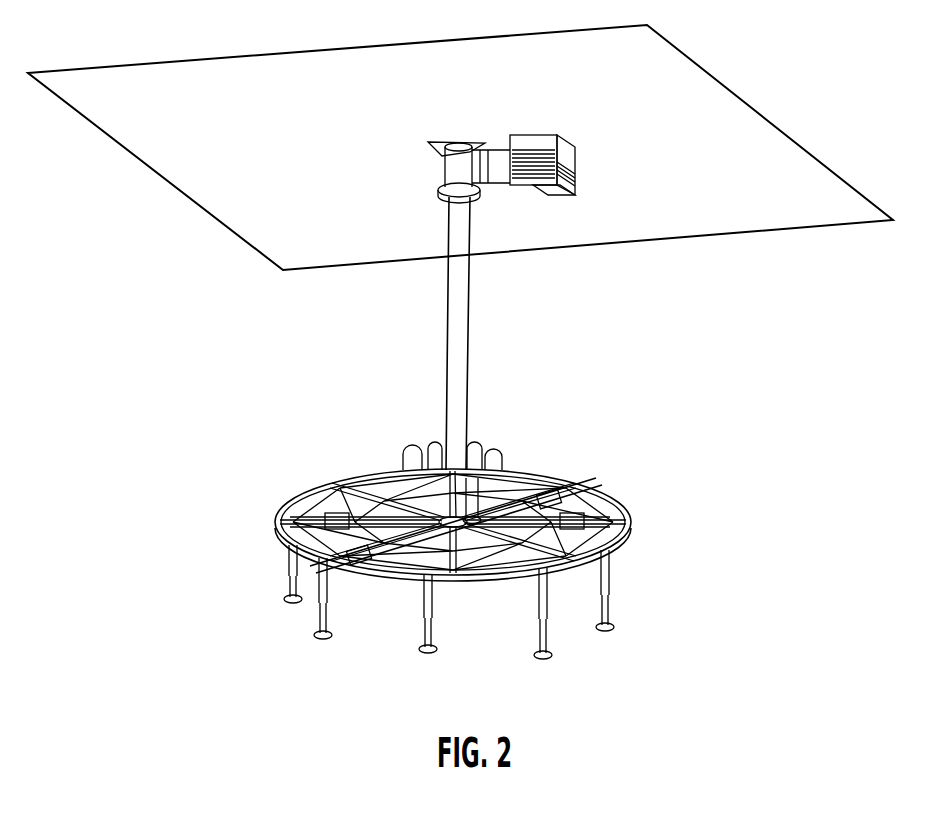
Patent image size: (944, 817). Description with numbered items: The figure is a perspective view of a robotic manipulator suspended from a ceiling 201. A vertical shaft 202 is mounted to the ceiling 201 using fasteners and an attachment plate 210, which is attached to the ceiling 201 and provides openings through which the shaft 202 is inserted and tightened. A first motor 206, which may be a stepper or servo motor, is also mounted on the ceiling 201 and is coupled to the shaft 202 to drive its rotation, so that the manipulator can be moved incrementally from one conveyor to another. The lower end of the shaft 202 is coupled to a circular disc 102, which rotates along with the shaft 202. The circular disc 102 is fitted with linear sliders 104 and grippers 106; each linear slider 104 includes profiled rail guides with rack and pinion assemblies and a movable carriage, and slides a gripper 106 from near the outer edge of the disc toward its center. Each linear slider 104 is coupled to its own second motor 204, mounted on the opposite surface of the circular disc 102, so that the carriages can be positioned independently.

The ceiling 201 is at (763, 165).
The attachment plate 210 is at (438, 145).
The shaft 202 is at (463, 262).
The first motor 206 is at (545, 172).
The second motor 204 is at (493, 450).
The circular disc 102 is at (540, 482).
The linear slider 104 is at (612, 512).
The gripper 106 is at (613, 583).